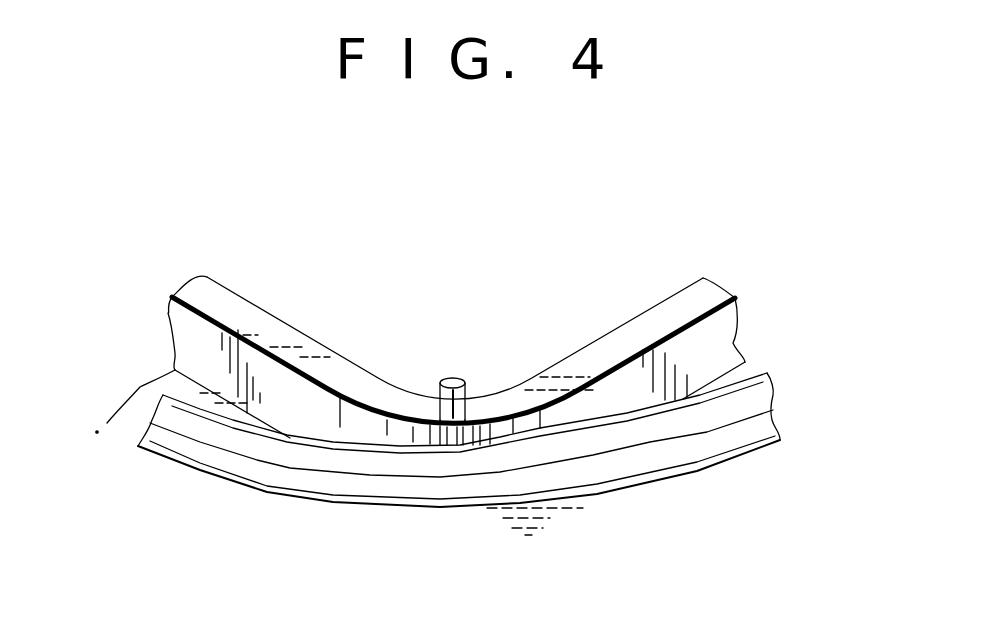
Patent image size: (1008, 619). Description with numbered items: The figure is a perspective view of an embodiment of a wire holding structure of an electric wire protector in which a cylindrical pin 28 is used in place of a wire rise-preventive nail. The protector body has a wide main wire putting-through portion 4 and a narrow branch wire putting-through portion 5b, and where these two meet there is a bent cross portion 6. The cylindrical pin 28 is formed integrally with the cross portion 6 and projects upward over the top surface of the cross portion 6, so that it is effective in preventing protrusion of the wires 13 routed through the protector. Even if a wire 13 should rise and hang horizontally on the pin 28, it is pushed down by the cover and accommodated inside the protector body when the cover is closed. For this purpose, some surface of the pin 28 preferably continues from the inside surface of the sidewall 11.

The main wire putting-through portion 4 is at (617, 323).
The branch wire putting-through portion 5b is at (260, 317).
The cross portion 6 is at (438, 398).
The cylindrical pin 28 is at (455, 378).
The wire 13 is at (587, 465).
The sidewall 11 is at (207, 350).